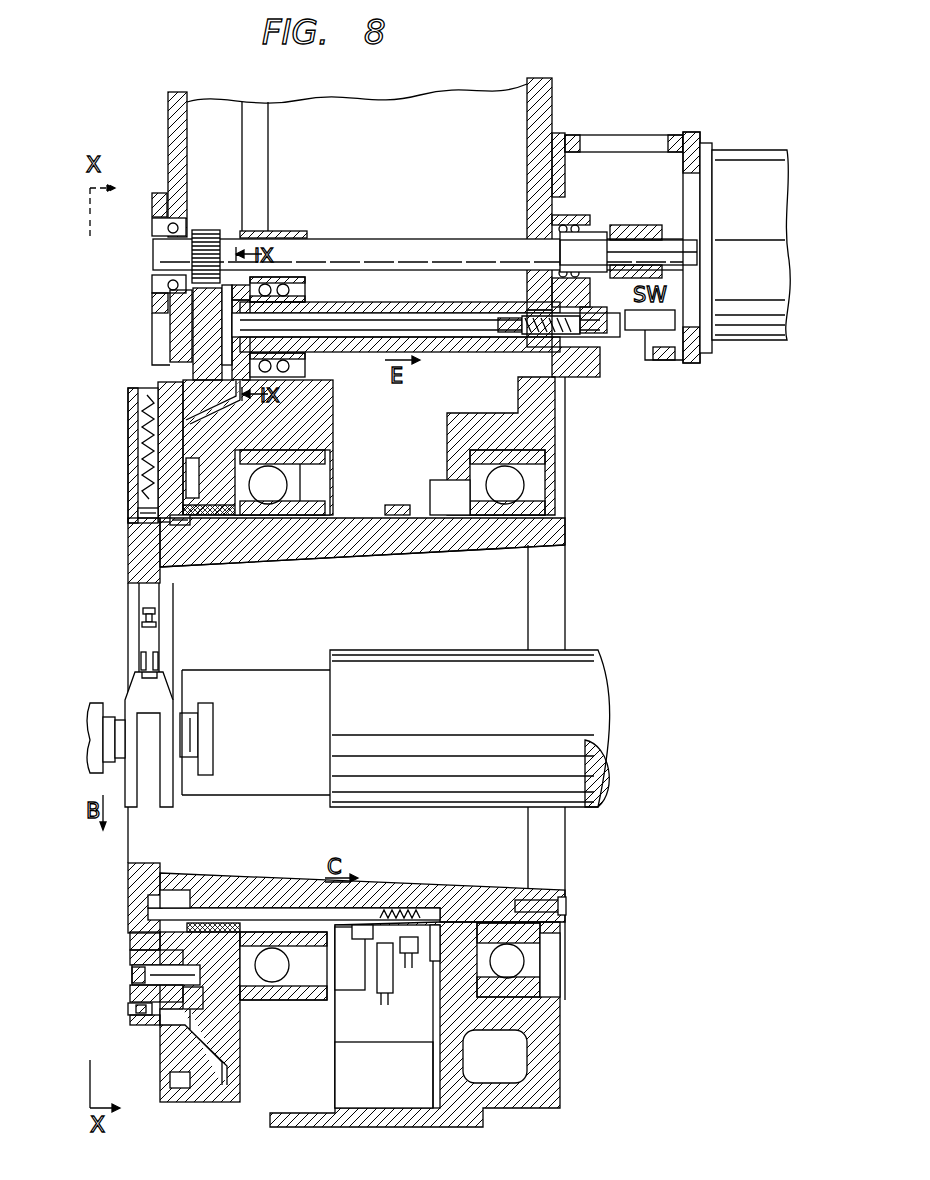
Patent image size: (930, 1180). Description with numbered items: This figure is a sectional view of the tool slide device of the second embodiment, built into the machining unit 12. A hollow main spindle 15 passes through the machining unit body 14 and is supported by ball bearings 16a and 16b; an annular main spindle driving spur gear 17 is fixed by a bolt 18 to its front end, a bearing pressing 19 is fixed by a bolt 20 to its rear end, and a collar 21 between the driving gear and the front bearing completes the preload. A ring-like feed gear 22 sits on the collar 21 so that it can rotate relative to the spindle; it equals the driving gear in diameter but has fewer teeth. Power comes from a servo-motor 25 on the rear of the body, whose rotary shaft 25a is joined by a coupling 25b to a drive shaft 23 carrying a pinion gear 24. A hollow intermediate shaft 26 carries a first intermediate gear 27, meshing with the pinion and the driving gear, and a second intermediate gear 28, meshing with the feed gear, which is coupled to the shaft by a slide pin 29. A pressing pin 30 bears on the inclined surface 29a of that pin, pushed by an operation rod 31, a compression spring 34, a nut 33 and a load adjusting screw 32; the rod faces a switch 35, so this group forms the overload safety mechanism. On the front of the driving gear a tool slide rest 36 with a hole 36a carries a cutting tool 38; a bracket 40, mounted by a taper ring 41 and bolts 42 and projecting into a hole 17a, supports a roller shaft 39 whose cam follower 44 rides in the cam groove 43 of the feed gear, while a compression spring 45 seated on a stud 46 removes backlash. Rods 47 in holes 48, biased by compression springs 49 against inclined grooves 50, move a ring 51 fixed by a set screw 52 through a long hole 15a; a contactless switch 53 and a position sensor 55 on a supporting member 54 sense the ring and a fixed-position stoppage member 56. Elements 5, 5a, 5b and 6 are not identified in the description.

The pin 5 is at (88, 745).
The pin head 5a is at (190, 738).
The pin holder 5b is at (143, 695).
The spindle 6 is at (296, 690).
The machining unit 12 is at (618, 562).
The machining unit body 14 is at (572, 621).
The hollow main spindle 15 is at (402, 549).
The long hole 15a is at (360, 890).
The ball bearing 16a is at (300, 484).
The ball bearing 16b is at (540, 500).
The main spindle driving spur gear 17 is at (158, 388).
The hole 17a is at (145, 950).
The bolt 18 is at (207, 520).
The bearing pressing 19 is at (560, 528).
The bolt 20 is at (564, 914).
The collar 21 is at (228, 505).
The feed gear 22 is at (255, 498).
The drive shaft 23 is at (402, 245).
The pinion gear 24 is at (208, 229).
The servo-motor 25 is at (746, 158).
The rotary shaft 25a is at (675, 250).
The coupling 25b is at (628, 225).
The hollow intermediate shaft 26 is at (446, 338).
The first intermediate gear 27 is at (172, 325).
The second intermediate gear 28 is at (235, 272).
The slide pin 29 is at (225, 313).
The inclined surface 29a is at (293, 335).
The pressing pin 30 is at (305, 290).
The operation rod 31 is at (394, 318).
The load adjusting screw 32 is at (612, 328).
The nut 33 is at (487, 332).
The compression spring 34 is at (520, 320).
The switch 35 is at (684, 350).
The tool slide rest 36 is at (128, 565).
The hole 36a is at (145, 870).
The cutting tool 38 is at (148, 640).
The roller shaft 39 is at (132, 975).
The bracket 40 is at (130, 991).
The taper ring 41 is at (130, 954).
The bolts 42 is at (128, 1005).
The cam groove 43 is at (193, 475).
The cam follower 44 is at (195, 915).
The compression spring 45 is at (135, 436).
The stud 46 is at (158, 517).
The rods 47 is at (305, 908).
The holes 48 is at (272, 908).
The compression springs 49 is at (405, 910).
The inclined grooves 50 is at (160, 903).
The ring 51 is at (355, 935).
The set screw 52 is at (368, 935).
The contactless switch 53 is at (390, 975).
The supporting member 54 is at (420, 1040).
The position sensor 55 is at (446, 952).
The fixed-position stoppage member 56 is at (425, 935).